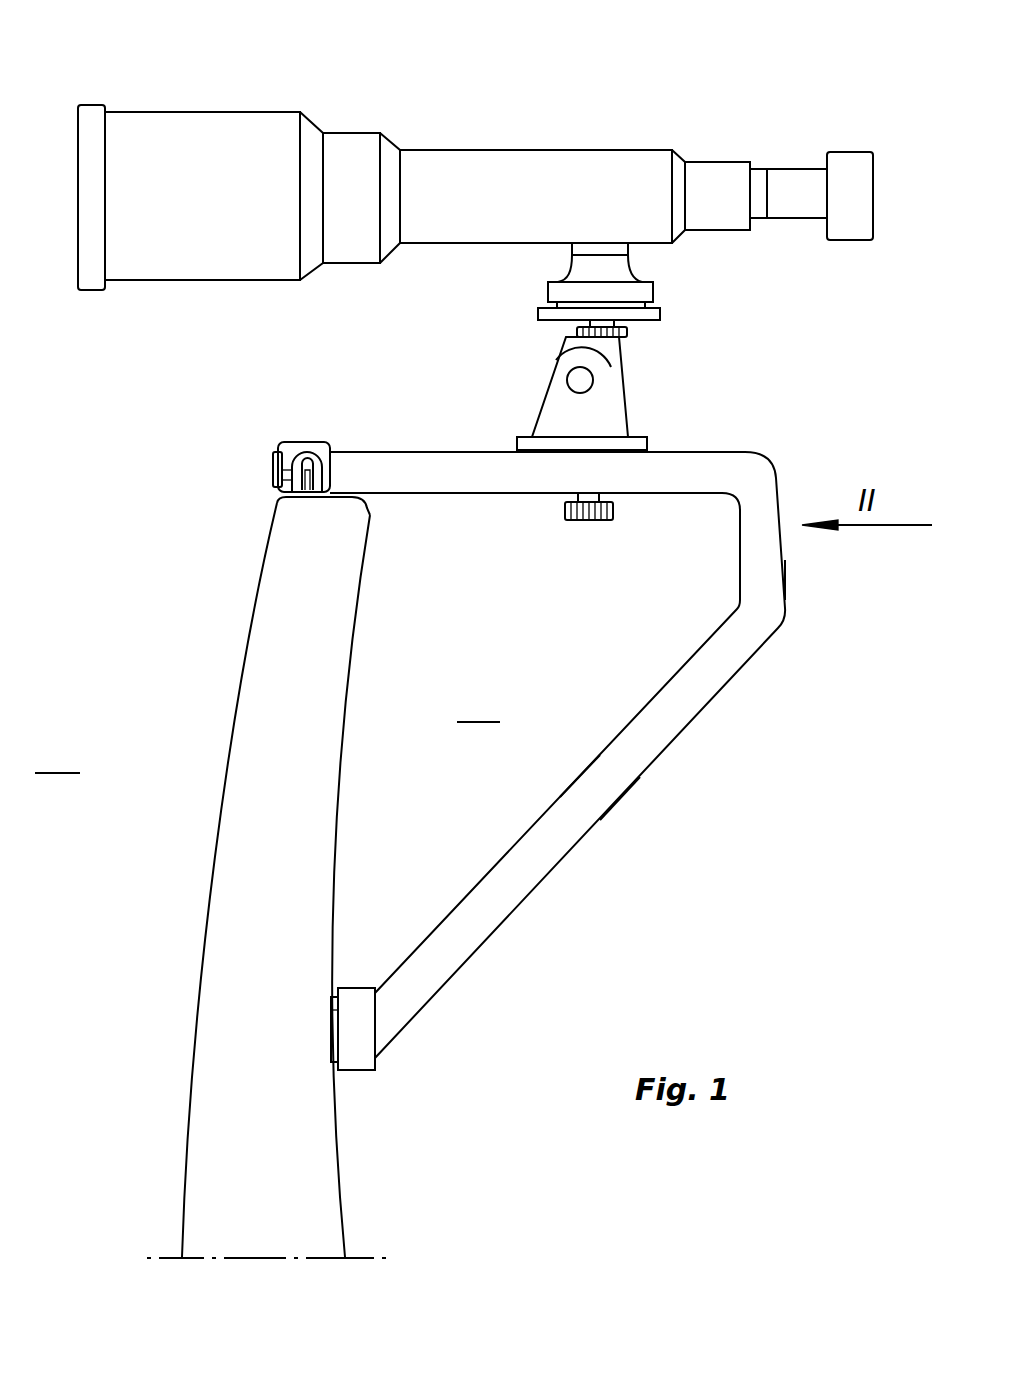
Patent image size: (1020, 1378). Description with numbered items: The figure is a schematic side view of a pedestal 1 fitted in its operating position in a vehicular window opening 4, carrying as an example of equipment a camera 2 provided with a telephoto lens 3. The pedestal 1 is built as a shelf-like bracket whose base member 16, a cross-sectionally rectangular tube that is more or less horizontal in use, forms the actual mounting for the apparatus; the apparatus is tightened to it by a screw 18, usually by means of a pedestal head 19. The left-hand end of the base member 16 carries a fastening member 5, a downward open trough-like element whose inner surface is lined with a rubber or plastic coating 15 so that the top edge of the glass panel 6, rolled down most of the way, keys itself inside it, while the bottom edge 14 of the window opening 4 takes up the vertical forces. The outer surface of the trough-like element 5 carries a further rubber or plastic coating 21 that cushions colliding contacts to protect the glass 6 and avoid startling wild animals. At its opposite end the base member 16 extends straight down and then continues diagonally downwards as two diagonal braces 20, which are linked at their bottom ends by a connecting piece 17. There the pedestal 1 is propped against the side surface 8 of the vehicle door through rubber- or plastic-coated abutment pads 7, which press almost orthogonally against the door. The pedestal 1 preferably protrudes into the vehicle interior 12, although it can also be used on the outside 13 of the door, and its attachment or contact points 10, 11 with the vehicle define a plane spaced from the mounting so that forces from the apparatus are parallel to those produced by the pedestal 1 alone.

The pedestal 1 is at (710, 773).
The camera 2 is at (850, 160).
The telephoto lens 3 is at (205, 125).
The vehicular window opening 4 is at (370, 311).
The fastening member 5 is at (315, 445).
The glass panel 6 is at (307, 497).
The abutment pads 7 is at (335, 1067).
The side surface 8 is at (342, 1203).
The attachment point 10 is at (330, 1018).
The attachment point 11 is at (280, 468).
The vehicle interior 12 is at (479, 704).
The outside 13 is at (58, 755).
The bottom edge 14 is at (370, 508).
The rubber or plastic coating 15 is at (303, 453).
The base member 16 is at (455, 465).
The connecting piece 17 is at (350, 1060).
The screw 18 is at (592, 522).
The pedestal head 19 is at (605, 408).
The diagonal braces 20 is at (632, 760).
The rubber or plastic coating 21 is at (275, 477).